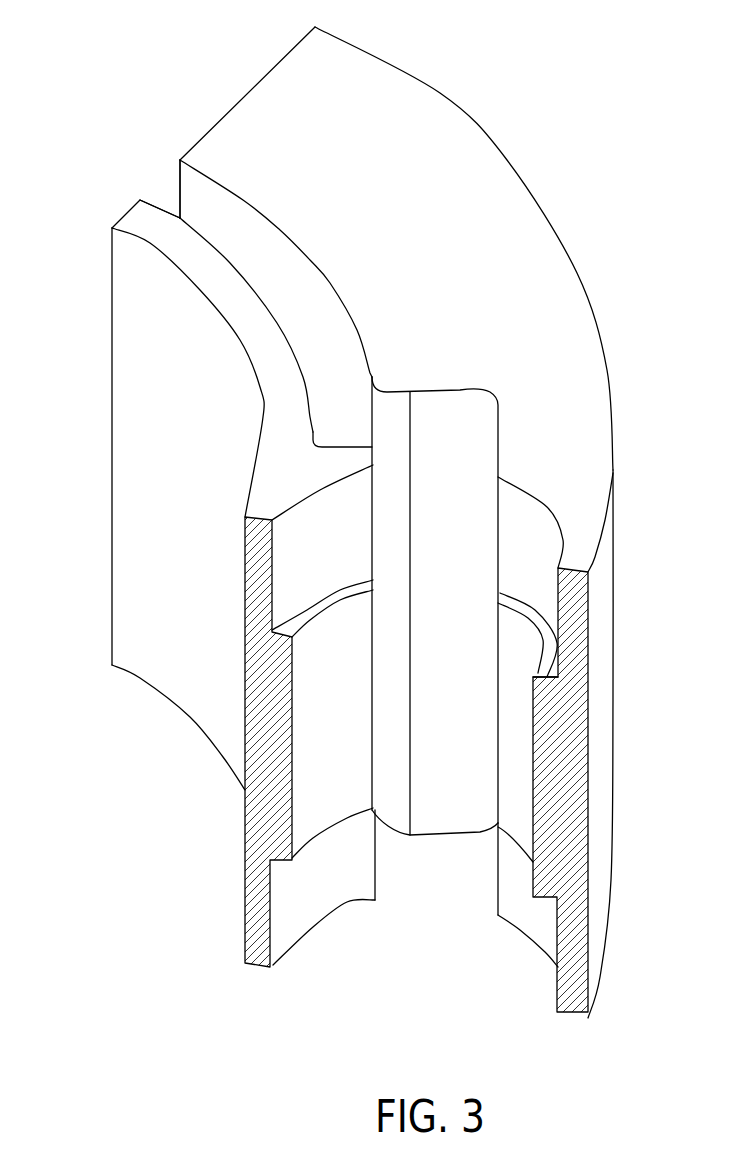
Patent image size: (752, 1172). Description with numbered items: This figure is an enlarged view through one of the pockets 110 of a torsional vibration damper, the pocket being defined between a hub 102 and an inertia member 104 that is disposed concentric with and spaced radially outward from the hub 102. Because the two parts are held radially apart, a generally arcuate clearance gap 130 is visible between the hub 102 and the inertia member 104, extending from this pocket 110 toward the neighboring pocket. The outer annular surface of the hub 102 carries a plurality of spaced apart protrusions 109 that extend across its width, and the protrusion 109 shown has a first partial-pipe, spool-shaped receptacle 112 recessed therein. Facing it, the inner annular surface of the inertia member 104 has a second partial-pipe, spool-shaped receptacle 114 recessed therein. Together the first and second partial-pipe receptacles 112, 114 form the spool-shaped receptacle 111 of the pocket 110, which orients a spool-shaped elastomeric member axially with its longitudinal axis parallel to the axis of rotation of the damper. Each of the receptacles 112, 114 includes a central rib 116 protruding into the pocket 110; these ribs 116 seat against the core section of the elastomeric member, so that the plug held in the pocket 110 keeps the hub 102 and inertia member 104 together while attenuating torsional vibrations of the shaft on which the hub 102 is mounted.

The hub 102 is at (140, 670).
The inertia member 104 is at (590, 297).
The protrusion 109 is at (360, 905).
The pocket 110 is at (457, 965).
The spool-shaped receptacle 111 is at (526, 511).
The first partial-pipe, spool-shaped receptacle 112 is at (305, 500).
The second partial-pipe, spool-shaped receptacle 114 is at (512, 543).
The central rib 116 is at (280, 846).
The clearance gap 130 is at (180, 160).